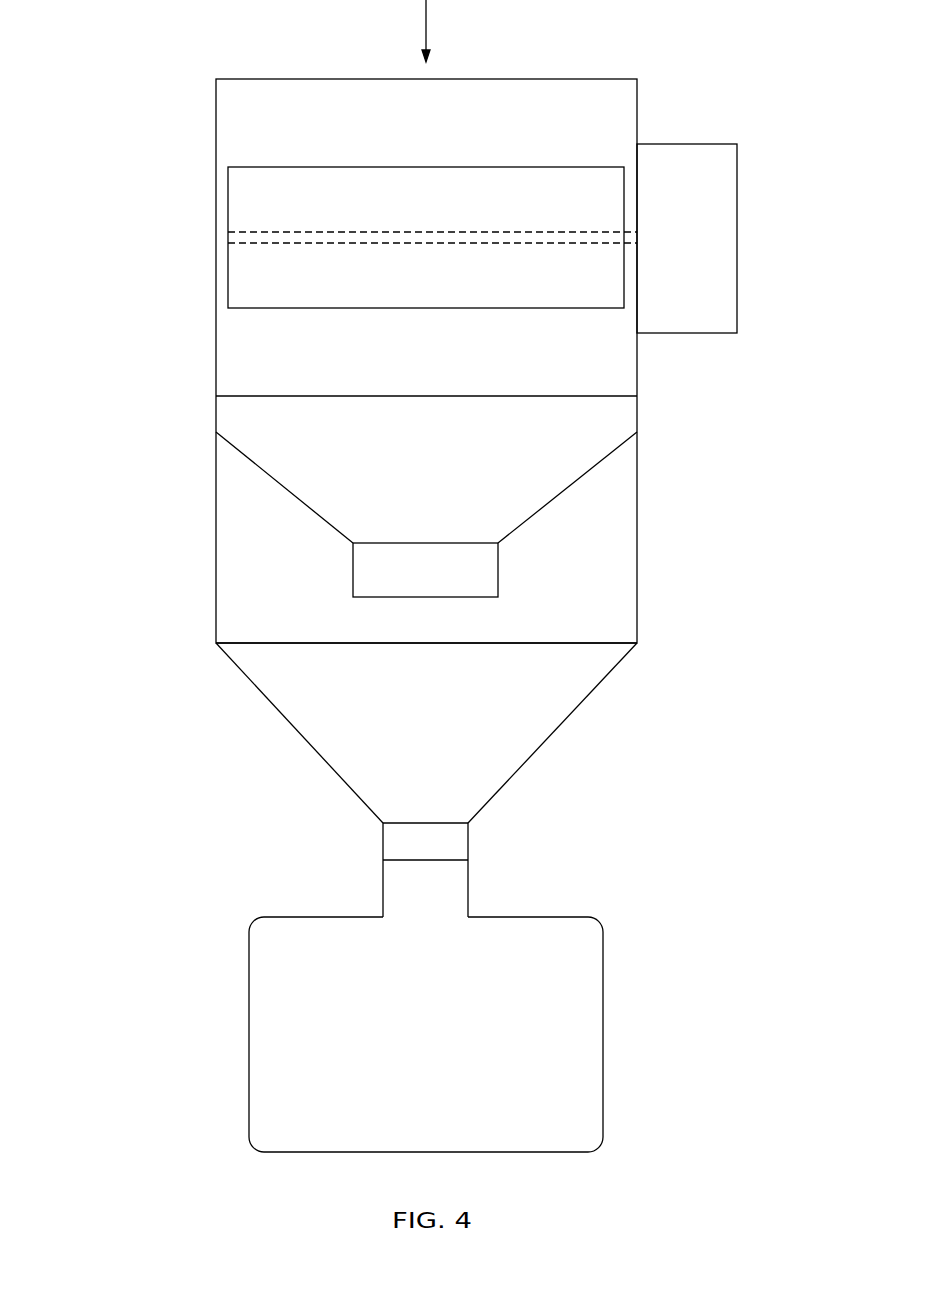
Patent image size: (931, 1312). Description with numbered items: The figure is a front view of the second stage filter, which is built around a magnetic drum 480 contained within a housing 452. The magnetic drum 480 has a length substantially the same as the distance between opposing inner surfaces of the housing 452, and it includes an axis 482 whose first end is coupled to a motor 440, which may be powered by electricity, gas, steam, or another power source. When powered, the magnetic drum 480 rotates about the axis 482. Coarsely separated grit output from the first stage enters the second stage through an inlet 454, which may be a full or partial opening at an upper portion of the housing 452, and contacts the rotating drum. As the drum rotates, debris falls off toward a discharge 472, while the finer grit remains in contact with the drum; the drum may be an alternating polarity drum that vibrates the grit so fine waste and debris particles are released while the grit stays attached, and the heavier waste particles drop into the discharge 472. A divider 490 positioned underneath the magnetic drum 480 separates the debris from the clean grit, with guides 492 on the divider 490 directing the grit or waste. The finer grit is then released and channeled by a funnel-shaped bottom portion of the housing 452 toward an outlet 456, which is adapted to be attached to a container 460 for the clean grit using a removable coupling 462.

The motor 440 is at (670, 290).
The housing 452 is at (216, 127).
The inlet 454 is at (426, 23).
The outlet 456 is at (383, 835).
The container 460 is at (408, 1059).
The removable coupling 462 is at (398, 845).
The discharge 472 is at (498, 580).
The magnetic drum 480 is at (243, 279).
The axis 482 is at (497, 232).
The divider 490 is at (443, 480).
The guides 492 is at (301, 505).